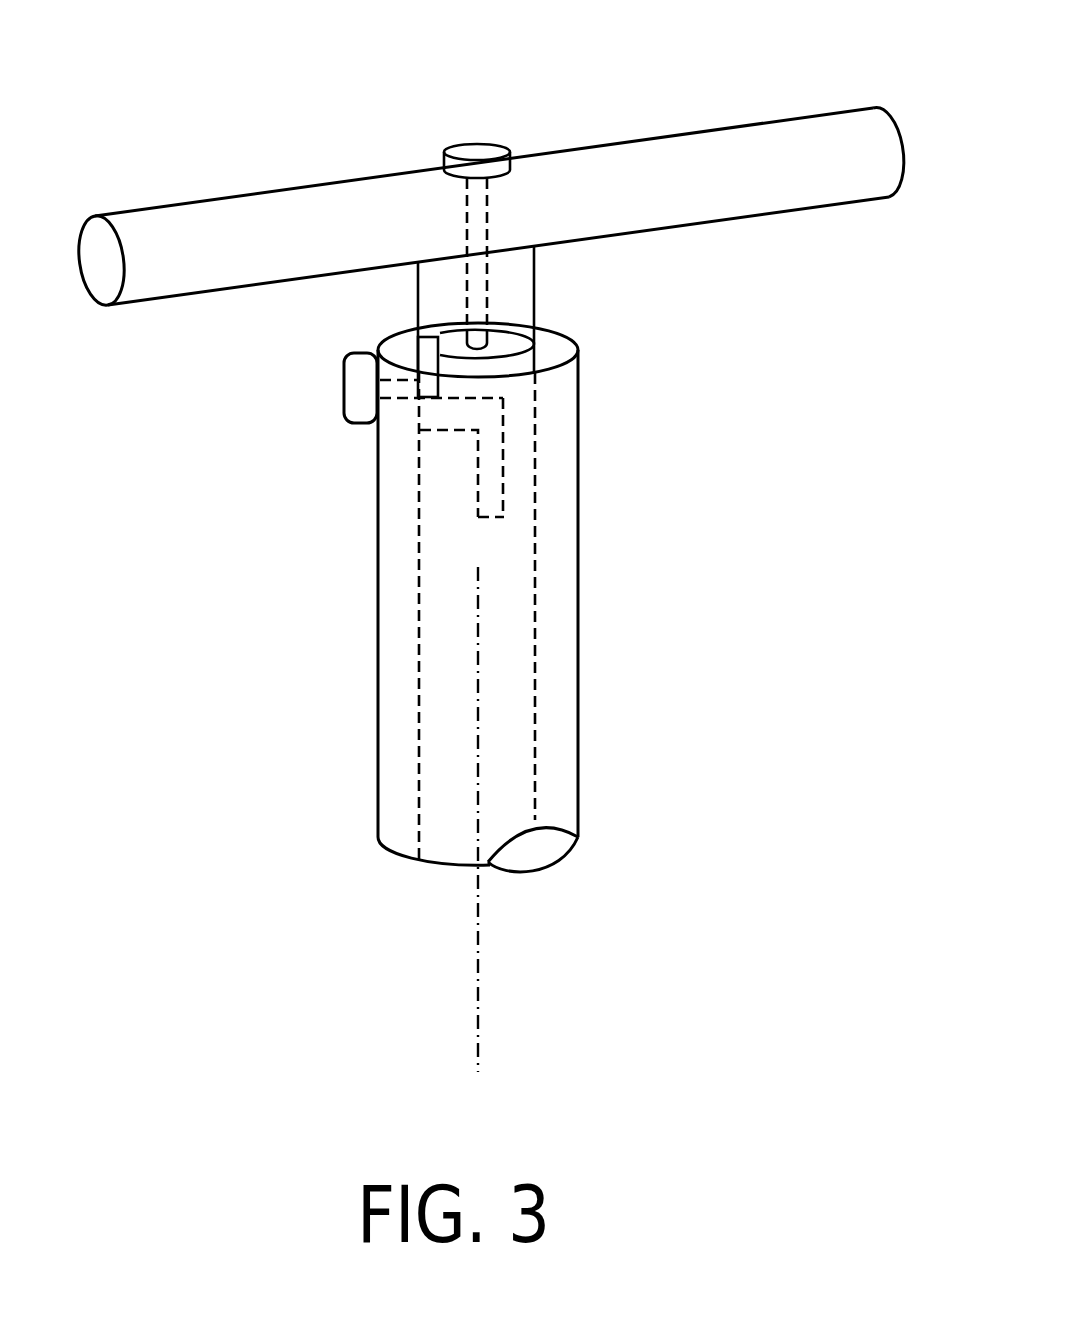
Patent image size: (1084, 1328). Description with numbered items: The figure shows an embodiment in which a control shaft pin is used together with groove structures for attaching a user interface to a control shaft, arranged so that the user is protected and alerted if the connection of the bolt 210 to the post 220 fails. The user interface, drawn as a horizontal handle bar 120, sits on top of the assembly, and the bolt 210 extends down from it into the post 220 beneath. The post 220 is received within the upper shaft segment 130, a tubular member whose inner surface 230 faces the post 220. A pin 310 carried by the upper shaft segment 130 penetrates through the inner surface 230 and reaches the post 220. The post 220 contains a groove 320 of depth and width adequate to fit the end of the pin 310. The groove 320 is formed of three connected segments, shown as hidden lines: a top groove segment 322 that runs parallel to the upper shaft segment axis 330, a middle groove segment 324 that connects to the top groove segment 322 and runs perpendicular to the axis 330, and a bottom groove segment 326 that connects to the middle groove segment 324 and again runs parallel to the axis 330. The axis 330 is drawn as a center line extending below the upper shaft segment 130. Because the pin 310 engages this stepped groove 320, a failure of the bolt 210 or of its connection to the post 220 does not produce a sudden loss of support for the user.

The handle bar 120 is at (874, 108).
The bolt 210 is at (478, 145).
The post 220 is at (536, 307).
The inner surface 230 is at (536, 623).
The upper shaft segment 130 is at (579, 527).
The pin 310 is at (345, 398).
The groove 320 is at (420, 413).
The top groove segment 322 is at (420, 365).
The middle groove segment 324 is at (467, 433).
The bottom groove segment 326 is at (477, 493).
The upper shaft segment axis 330 is at (488, 992).